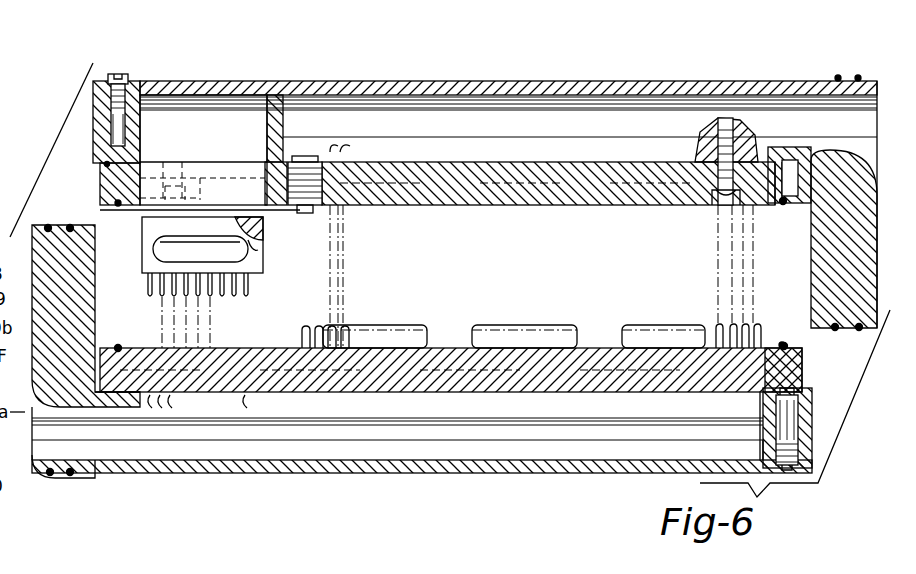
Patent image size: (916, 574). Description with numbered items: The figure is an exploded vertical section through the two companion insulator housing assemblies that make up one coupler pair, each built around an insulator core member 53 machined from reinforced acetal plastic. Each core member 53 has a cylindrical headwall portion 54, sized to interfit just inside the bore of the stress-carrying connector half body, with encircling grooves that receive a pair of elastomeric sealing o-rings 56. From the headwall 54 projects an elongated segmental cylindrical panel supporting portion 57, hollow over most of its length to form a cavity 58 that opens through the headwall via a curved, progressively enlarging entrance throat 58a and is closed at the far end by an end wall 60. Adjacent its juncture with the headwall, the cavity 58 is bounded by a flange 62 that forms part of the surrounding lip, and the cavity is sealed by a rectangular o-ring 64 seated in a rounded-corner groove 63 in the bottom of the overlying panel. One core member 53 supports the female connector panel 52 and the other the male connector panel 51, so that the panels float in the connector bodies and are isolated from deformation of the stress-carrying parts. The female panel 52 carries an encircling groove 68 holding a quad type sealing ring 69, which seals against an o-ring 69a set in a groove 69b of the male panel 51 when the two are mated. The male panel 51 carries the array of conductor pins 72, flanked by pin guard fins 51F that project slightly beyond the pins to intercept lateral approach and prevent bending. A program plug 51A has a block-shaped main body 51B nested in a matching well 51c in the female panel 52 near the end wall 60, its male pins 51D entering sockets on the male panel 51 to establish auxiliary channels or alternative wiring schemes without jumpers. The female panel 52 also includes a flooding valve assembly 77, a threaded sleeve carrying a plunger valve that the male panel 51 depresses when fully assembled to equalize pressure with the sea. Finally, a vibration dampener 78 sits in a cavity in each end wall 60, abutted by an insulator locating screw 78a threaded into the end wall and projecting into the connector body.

The male connector panel 51 is at (449, 348).
The program plug 51A is at (280, 253).
The main body portion 51B is at (142, 232).
The well or cavity 51c is at (226, 168).
The male connector pins 51D is at (232, 300).
The pin guard fins 51F is at (650, 325).
The female connector panel 52 is at (512, 198).
The insulator core member 53 is at (868, 262).
The cylindrical headwall portion 54 is at (88, 297).
The sealing o-rings 56 is at (858, 332).
The panel supporting portion 57 is at (470, 83).
The cavity 58 is at (588, 132).
The entrance throat 58a is at (866, 118).
The end wall 60 is at (104, 182).
The flange 62 is at (135, 395).
The groove or channel 63 is at (100, 170).
The rectangular sealing o-ring 64 is at (800, 170).
The encircling groove 68 is at (782, 162).
The quad type sealing ring 69 is at (784, 204).
The sealing o-ring 69a is at (116, 345).
The groove 69b is at (785, 343).
The conductor pins 72 is at (717, 325).
The flooding valve assembly 77 is at (304, 172).
The vibration dampener 78 is at (792, 419).
The insulator locating screw 78a is at (796, 447).